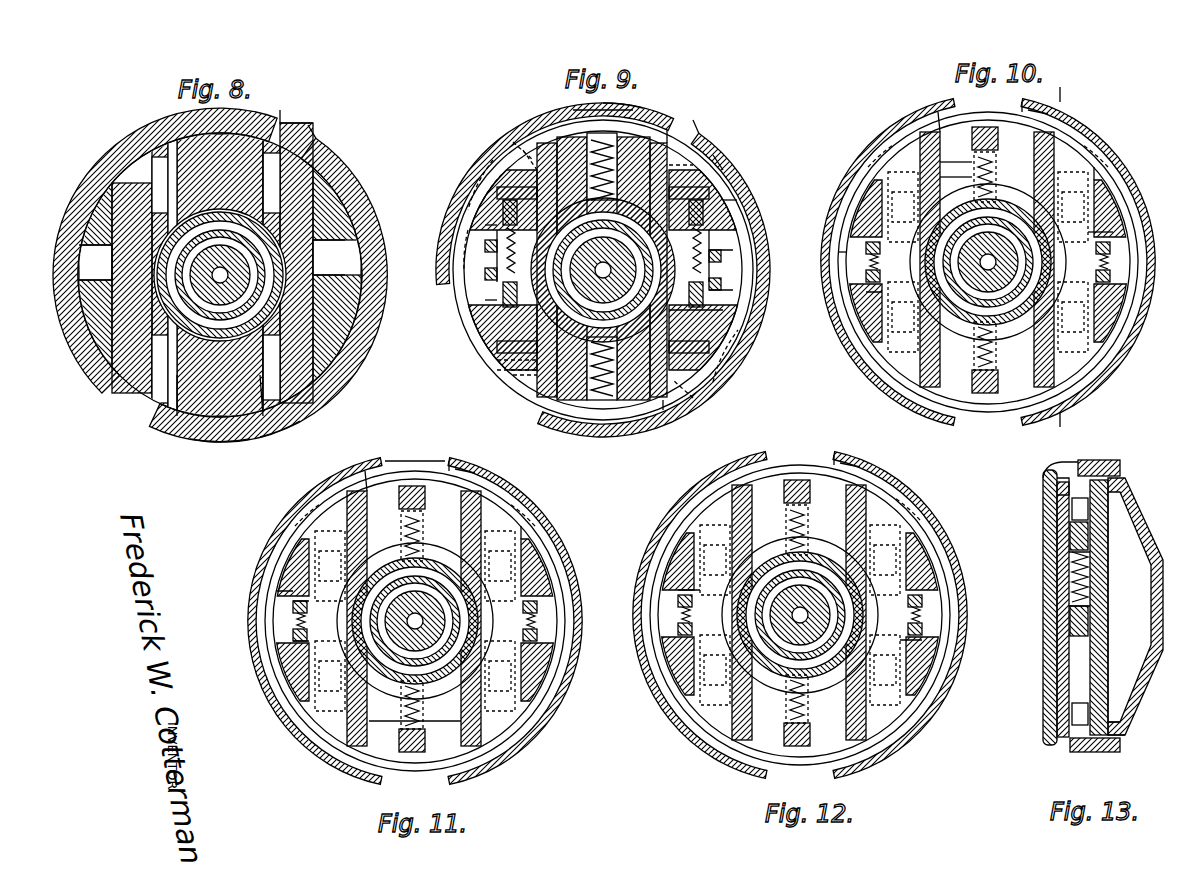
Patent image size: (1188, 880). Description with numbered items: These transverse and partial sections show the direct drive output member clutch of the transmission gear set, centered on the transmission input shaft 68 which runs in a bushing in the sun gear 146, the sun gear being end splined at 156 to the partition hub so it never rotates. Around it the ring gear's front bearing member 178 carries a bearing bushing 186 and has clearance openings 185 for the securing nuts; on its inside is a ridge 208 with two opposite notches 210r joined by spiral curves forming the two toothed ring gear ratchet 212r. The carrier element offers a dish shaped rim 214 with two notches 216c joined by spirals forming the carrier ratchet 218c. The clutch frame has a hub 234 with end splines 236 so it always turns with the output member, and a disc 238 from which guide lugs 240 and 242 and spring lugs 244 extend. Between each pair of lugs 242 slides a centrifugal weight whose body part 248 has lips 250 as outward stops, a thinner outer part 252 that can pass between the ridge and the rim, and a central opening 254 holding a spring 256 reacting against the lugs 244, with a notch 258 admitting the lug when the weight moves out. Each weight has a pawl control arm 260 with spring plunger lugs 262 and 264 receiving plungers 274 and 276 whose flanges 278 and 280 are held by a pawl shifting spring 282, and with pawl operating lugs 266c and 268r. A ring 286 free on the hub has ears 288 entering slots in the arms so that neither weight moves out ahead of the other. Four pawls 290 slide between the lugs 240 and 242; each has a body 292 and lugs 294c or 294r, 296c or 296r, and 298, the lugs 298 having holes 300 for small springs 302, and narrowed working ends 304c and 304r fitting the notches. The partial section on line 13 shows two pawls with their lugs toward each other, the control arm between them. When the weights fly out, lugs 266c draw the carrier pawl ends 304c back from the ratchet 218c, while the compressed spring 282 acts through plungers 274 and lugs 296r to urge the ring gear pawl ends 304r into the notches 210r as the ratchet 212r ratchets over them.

In FIG. 10, the section line 13— 13 is at (1075, 100).
In FIG. 8, the transmission input shaft 68 is at (228, 272).
In FIG. 9, the transmission input shaft 68 is at (616, 262).
In FIG. 12, the transmission input shaft 68 is at (806, 608).
In FIG. 10, the sun gear 146 is at (980, 230).
In FIG. 8, the end splines 156 is at (235, 285).
In FIG. 8, the front bearing member 178 is at (225, 442).
In FIG. 9, the front bearing member 178 is at (640, 108).
In FIG. 10, the front bearing member 178 is at (935, 118).
In FIG. 13, the front bearing member 178 is at (1110, 470).
In FIG. 10, the clearance openings 185 is at (845, 215).
In FIG. 11, the clearance openings 185 is at (275, 530).
In FIG. 12, the clearance openings 185 is at (940, 528).
In FIG. 8, the bearing bushing 186 is at (190, 185).
In FIG. 8, the ridge 208 is at (265, 430).
In FIG. 9, the ridge 208 is at (515, 140).
In FIG. 8, the notches 210r is at (292, 140).
In FIG. 9, the notches 210r is at (675, 130).
In FIG. 10, the notches 210r is at (1075, 135).
In FIG. 11, the notches 210r is at (470, 500).
In FIG. 12, the notches 210r is at (900, 492).
In FIG. 13, the notches 210r is at (1058, 478).
In FIG. 8, the ring gear ratchet 212r is at (115, 255).
In FIG. 9, the ring gear ratchet 212r is at (500, 245).
In FIG. 10, the ring gear ratchet 212r is at (860, 170).
In FIG. 11, the ring gear ratchet 212r is at (285, 560).
In FIG. 10, the dish shaped rim 214 is at (895, 115).
In FIG. 13, the dish shaped rim 214 is at (1122, 715).
In FIG. 10, the notches 216c is at (860, 140).
In FIG. 11, the notches 216c is at (300, 505).
In FIG. 12, the notches 216c is at (715, 495).
In FIG. 13, the notches 216c is at (1118, 735).
In FIG. 10, the carrier ratchet 218c is at (1095, 160).
In FIG. 11, the carrier ratchet 218c is at (520, 525).
In FIG. 10, the hub 234 is at (992, 270).
In FIG. 8, the end splines 236 is at (235, 185).
In FIG. 13, the disc 238 is at (1135, 540).
In FIG. 8, the guide lugs 240 is at (90, 215).
In FIG. 9, the guide lugs 240 is at (690, 200).
In FIG. 10, the guide lugs 240 is at (870, 185).
In FIG. 11, the guide lugs 240 is at (300, 580).
In FIG. 8, the guide lugs 242 is at (128, 200).
In FIG. 9, the guide lugs 242 is at (660, 108).
In FIG. 10, the guide lugs 242 is at (972, 162).
In FIG. 11, the guide lugs 242 is at (445, 490).
In FIG. 9, the spring lugs 244 is at (560, 118).
In FIG. 10, the spring lugs 244 is at (998, 125).
In FIG. 8, the body part 248 is at (205, 380).
In FIG. 9, the body part 248 is at (575, 380).
In FIG. 8, the lips 250 is at (248, 370).
In FIG. 9, the lips 250 is at (638, 380).
In FIG. 10, the thinner outer part 252 is at (985, 150).
In FIG. 11, the thinner outer part 252 is at (405, 722).
In FIG. 9, the central opening 254 is at (612, 125).
In FIG. 10, the central opening 254 is at (990, 185).
In FIG. 11, the central opening 254 is at (405, 585).
In FIG. 12, the central opening 254 is at (800, 528).
In FIG. 9, the spring 256 is at (603, 345).
In FIG. 10, the spring 256 is at (972, 178).
In FIG. 11, the spring 256 is at (415, 685).
In FIG. 12, the spring 256 is at (800, 678).
In FIG. 10, the notch 258 is at (978, 350).
In FIG. 9, the pawl control arm 260 is at (708, 262).
In FIG. 9, the spring plunger lug 262 is at (490, 310).
In FIG. 13, the spring plunger lug 262 is at (1072, 538).
In FIG. 9, the spring plunger lug 264 is at (485, 228).
In FIG. 13, the spring plunger lug 264 is at (1072, 622).
In FIG. 9, the pawl operating lug 266c is at (480, 330).
In FIG. 10, the pawl operating lug 266c is at (1066, 200).
In FIG. 11, the pawl operating lug 266c is at (495, 560).
In FIG. 12, the pawl operating lug 266c is at (875, 560).
In FIG. 9, the pawl operating lug 268r is at (510, 150).
In FIG. 10, the pawl operating lug 268r is at (905, 195).
In FIG. 11, the pawl operating lug 268r is at (335, 560).
In FIG. 12, the pawl operating lug 268r is at (725, 560).
In FIG. 9, the spring plunger 274 is at (728, 168).
In FIG. 10, the spring plunger 274 is at (885, 275).
In FIG. 11, the spring plunger 274 is at (280, 650).
In FIG. 13, the spring plunger 274 is at (1100, 575).
In FIG. 9, the spring plunger 276 is at (492, 215).
In FIG. 10, the spring plunger 276 is at (995, 205).
In FIG. 11, the spring plunger 276 is at (300, 600).
In FIG. 13, the spring plunger 276 is at (1105, 665).
In FIG. 9, the flange 278 is at (500, 280).
In FIG. 9, the flange 280 is at (700, 308).
In FIG. 9, the pawl shifting spring 282 is at (735, 200).
In FIG. 10, the pawl shifting spring 282 is at (1092, 232).
In FIG. 11, the pawl shifting spring 282 is at (522, 615).
In FIG. 12, the pawl shifting spring 282 is at (685, 600).
In FIG. 13, the pawl shifting spring 282 is at (1070, 610).
In FIG. 9, the ring 286 is at (535, 330).
In FIG. 10, the ring 286 is at (992, 203).
In FIG. 9, the ears 288 is at (625, 282).
In FIG. 11, the ears 288 is at (420, 630).
In FIG. 12, the ears 288 is at (812, 626).
In FIG. 9, the pawls 290 is at (672, 395).
In FIG. 8, the body part 292 is at (130, 150).
In FIG. 13, the body part 292 is at (1072, 580).
In FIG. 9, the pawl lug 294c is at (505, 380).
In FIG. 10, the pawl lug 294c is at (1080, 180).
In FIG. 11, the pawl lug 294c is at (495, 540).
In FIG. 12, the pawl lug 294c is at (875, 540).
In FIG. 13, the pawl lug 294c is at (1078, 522).
In FIG. 9, the pawl lug 294r is at (505, 170).
In FIG. 10, the pawl lug 294r is at (895, 150).
In FIG. 11, the pawl lug 294r is at (335, 540).
In FIG. 12, the pawl lug 294r is at (725, 540).
In FIG. 13, the pawl lug 294r is at (1082, 708).
In FIG. 9, the pawl lug 296c is at (485, 195).
In FIG. 10, the pawl lug 296c is at (870, 145).
In FIG. 11, the pawl lug 296c is at (290, 570).
In FIG. 12, the pawl lug 296c is at (675, 560).
In FIG. 13, the pawl lug 296c is at (1050, 700).
In FIG. 9, the pawl lug 296r is at (725, 150).
In FIG. 10, the pawl lug 296r is at (1115, 165).
In FIG. 11, the pawl lug 296r is at (535, 530).
In FIG. 12, the pawl lug 296r is at (920, 515).
In FIG. 13, the pawl lug 296r is at (1050, 548).
In FIG. 8, the pawl lug 298 is at (105, 283).
In FIG. 9, the pawl lug 298 is at (735, 235).
In FIG. 10, the pawl lug 298 is at (866, 250).
In FIG. 11, the pawl lug 298 is at (290, 638).
In FIG. 9, the holes 300 is at (484, 250).
In FIG. 9, the small spring 302 is at (484, 270).
In FIG. 10, the small spring 302 is at (1098, 264).
In FIG. 11, the small spring 302 is at (292, 622).
In FIG. 12, the small spring 302 is at (678, 618).
In FIG. 10, the carrier pawl end 304c is at (880, 125).
In FIG. 11, the carrier pawl end 304c is at (335, 500).
In FIG. 12, the carrier pawl end 304c is at (715, 510).
In FIG. 13, the carrier pawl end 304c is at (1105, 752).
In FIG. 8, the ring gear pawl end 304r is at (325, 128).
In FIG. 9, the ring gear pawl end 304r is at (695, 140).
In FIG. 10, the ring gear pawl end 304r is at (1085, 150).
In FIG. 11, the ring gear pawl end 304r is at (500, 510).
In FIG. 12, the ring gear pawl end 304r is at (880, 490).
In FIG. 13, the ring gear pawl end 304r is at (1055, 490).